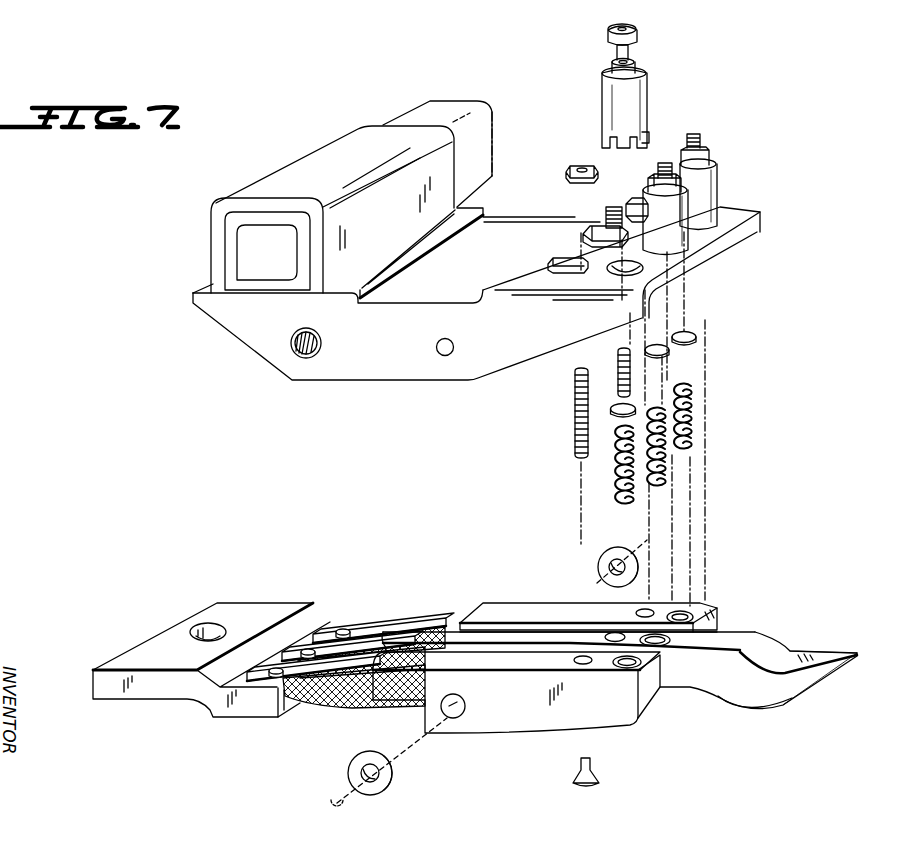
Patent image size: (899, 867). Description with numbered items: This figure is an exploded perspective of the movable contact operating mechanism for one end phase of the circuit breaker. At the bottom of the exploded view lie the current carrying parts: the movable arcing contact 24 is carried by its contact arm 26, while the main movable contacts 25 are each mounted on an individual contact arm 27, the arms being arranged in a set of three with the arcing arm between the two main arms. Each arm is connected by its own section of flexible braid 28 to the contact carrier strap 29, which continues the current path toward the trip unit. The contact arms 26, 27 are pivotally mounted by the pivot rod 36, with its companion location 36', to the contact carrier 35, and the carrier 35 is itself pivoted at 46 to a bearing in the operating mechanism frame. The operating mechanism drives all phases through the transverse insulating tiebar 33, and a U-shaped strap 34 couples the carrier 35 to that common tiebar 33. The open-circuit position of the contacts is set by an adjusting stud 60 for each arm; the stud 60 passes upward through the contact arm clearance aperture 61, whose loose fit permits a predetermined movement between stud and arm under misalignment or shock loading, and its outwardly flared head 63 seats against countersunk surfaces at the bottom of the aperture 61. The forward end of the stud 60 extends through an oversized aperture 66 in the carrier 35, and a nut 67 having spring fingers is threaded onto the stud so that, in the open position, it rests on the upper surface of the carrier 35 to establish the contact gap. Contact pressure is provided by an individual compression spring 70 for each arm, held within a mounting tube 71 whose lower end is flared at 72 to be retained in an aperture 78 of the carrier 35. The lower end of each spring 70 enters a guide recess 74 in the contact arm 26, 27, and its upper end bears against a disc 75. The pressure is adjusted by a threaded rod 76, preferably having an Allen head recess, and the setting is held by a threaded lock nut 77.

The movable arcing contact 24 is at (760, 713).
The main movable contact 25 is at (622, 727).
The contact arm 26 is at (735, 633).
The contact arm 27 is at (508, 603).
The flexible braid 28 is at (392, 633).
The contact carrier strap 29 is at (155, 690).
The transverse insulating tiebar 33 is at (232, 238).
The U-shaped strap 34 is at (307, 154).
The contact carrier 35 is at (395, 373).
The pivot rod 36 is at (398, 750).
The pivot hole 36' is at (464, 340).
The carrier pivot 46 is at (300, 357).
The adjusting stud 60 is at (661, 176).
The contact arm clearance aperture 61 is at (633, 611).
The outwardly flared head 63 is at (592, 785).
The oversized aperture 66 is at (548, 265).
The nut having spring fingers 67 is at (567, 171).
The compression spring 70 is at (638, 498).
The mounting tube 71 is at (647, 104).
The flared lower end 72 is at (650, 136).
The guide recess 74 is at (703, 608).
The disc 75 is at (637, 406).
The threaded rod 76 is at (702, 136).
The threaded lock nut 77 is at (639, 35).
The aperture 78 is at (643, 270).